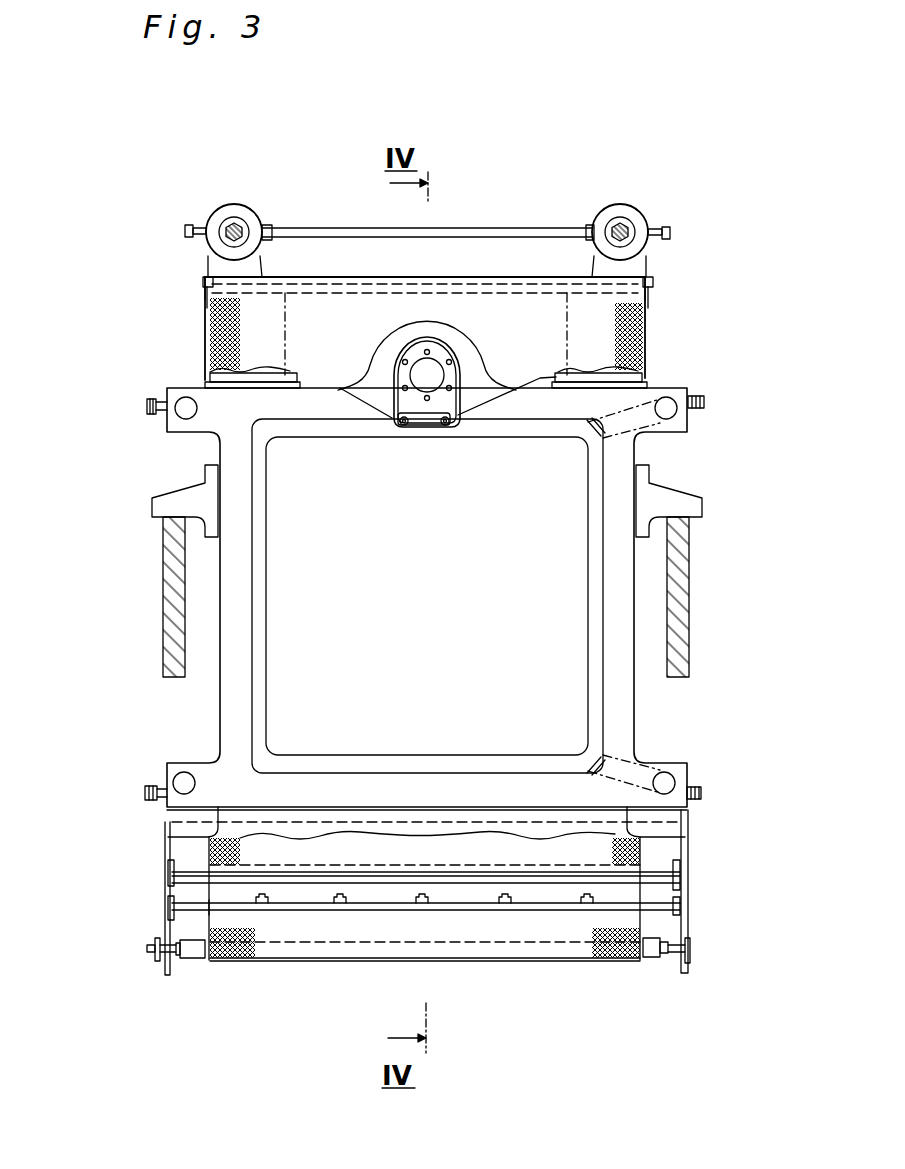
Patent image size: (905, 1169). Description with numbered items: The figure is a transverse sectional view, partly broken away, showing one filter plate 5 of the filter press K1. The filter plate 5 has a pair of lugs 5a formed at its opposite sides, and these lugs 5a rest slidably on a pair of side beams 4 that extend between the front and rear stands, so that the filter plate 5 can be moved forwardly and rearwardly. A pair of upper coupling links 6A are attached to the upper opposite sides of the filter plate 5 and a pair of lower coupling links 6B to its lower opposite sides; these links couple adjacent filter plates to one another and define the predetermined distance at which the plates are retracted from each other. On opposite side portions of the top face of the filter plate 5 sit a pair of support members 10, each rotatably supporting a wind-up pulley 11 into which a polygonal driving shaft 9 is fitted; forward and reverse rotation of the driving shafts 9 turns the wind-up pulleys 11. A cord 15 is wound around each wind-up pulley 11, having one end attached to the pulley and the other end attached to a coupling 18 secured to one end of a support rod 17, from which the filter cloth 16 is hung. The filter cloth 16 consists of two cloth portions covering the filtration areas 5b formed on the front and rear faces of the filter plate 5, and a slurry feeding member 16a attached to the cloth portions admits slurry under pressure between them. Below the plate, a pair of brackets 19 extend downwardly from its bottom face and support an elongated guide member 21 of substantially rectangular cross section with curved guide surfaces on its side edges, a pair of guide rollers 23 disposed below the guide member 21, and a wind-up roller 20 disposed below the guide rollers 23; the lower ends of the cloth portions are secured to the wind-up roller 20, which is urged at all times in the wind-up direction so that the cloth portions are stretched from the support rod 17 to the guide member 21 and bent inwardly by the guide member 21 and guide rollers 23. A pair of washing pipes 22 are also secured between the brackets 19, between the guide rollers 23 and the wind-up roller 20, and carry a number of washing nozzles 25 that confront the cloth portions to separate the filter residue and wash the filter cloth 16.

The side beam 4 is at (163, 612).
The filter plate 5 is at (636, 705).
The lug 5a is at (165, 498).
The filtration area 5b is at (447, 622).
The upper coupling link 6A is at (150, 402).
The lower coupling link 6B is at (150, 792).
The driving shaft 9 is at (235, 216).
The support member 10 is at (266, 257).
The wind-up pulley 11 is at (212, 210).
The cord 15 is at (205, 252).
The filter cloth 16 is at (647, 337).
The slurry feeding member 16a is at (425, 430).
The support rod 17 is at (477, 275).
The coupling 18 is at (205, 276).
The bracket 19 is at (163, 907).
The wind-up roller 20 is at (272, 950).
The guide member 21 is at (656, 863).
The washing pipe 22 is at (317, 907).
The guide roller 23 is at (656, 876).
The washing nozzle 25 is at (420, 898).
The filter press K1 is at (694, 921).